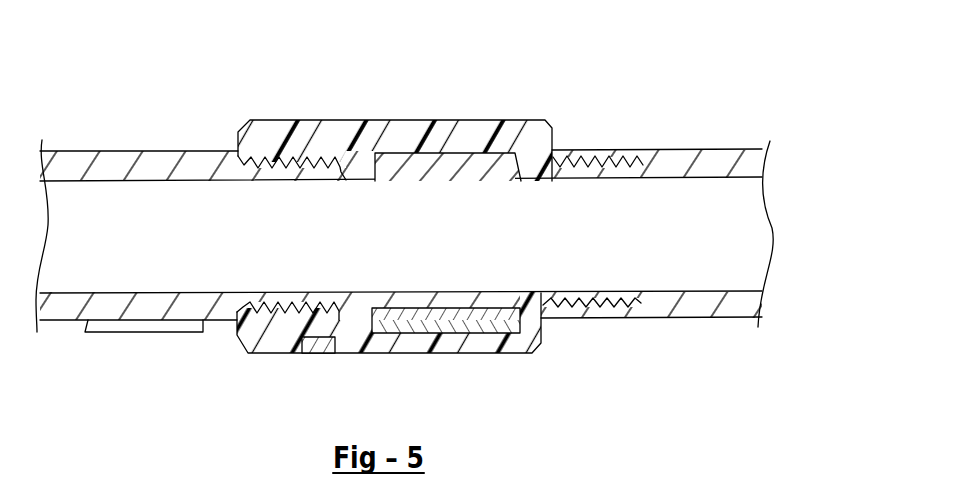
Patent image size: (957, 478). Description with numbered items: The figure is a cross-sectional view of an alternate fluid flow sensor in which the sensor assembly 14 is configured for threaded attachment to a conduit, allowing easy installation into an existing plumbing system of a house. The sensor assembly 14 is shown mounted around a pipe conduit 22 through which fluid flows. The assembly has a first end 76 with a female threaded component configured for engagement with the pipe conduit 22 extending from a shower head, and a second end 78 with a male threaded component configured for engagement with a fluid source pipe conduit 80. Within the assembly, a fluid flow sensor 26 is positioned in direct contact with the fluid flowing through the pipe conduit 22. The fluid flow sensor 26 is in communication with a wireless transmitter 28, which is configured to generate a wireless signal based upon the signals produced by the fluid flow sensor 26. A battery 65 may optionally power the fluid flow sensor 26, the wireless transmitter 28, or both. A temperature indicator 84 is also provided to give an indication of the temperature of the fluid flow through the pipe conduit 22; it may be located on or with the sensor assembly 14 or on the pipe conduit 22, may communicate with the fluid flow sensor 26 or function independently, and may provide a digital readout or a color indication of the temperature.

The sensor assembly 14 is at (636, 104).
The pipe conduit 22 is at (130, 151).
The fluid flow sensor 26 is at (465, 162).
The wireless transmitter 28 is at (450, 330).
The battery 65 is at (326, 354).
The first end 76 is at (222, 115).
The second end 78 is at (670, 157).
The fluid source pipe conduit 80 is at (736, 160).
The temperature indicator 84 is at (152, 334).